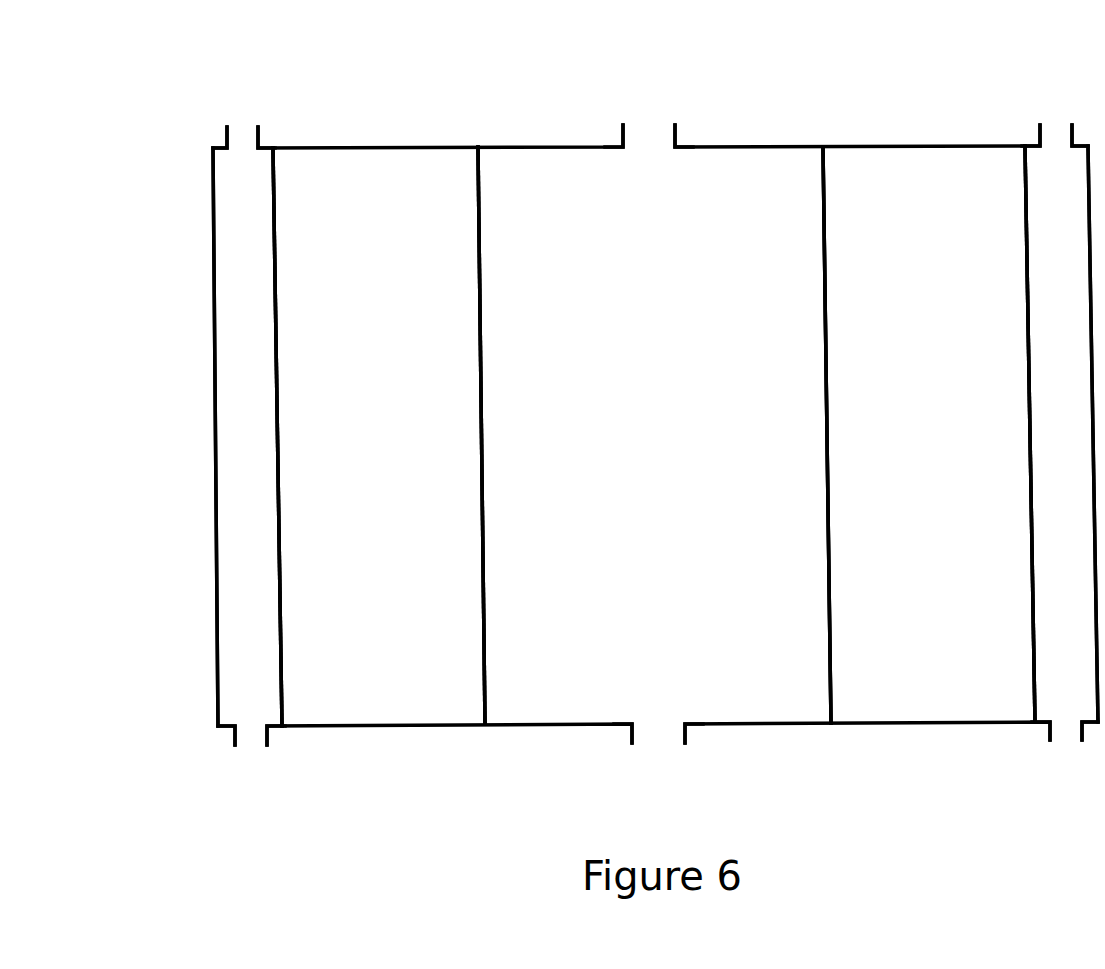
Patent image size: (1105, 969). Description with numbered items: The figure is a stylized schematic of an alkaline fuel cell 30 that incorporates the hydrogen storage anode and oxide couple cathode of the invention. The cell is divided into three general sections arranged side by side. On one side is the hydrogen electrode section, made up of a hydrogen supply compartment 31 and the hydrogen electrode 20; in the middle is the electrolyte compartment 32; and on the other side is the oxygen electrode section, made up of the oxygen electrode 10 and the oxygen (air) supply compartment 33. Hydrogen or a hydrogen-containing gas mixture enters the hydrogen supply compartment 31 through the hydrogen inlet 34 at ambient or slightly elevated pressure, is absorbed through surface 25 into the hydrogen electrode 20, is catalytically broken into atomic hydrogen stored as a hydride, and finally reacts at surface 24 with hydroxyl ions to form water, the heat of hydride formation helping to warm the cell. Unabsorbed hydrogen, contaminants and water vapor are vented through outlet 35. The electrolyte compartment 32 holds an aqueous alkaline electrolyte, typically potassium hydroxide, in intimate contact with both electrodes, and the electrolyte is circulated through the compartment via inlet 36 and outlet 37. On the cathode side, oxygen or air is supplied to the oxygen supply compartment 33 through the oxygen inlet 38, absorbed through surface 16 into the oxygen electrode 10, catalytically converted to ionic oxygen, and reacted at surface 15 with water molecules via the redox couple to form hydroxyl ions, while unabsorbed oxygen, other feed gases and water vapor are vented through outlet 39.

The oxygen electrode 10 is at (929, 434).
The surface of the oxygen electrode 15 is at (819, 168).
The surface of the oxygen electrode 16 is at (1023, 168).
The hydrogen electrode 20 is at (379, 436).
The surface of the hydrogen electrode 24 is at (484, 172).
The surface of the hydrogen electrode 25 is at (278, 172).
The alkaline fuel cell 30 is at (204, 285).
The hydrogen supply compartment 31 is at (247, 437).
The electrolyte compartment 32 is at (654, 435).
The oxygen supply compartment 33 is at (1061, 434).
The hydrogen inlet 34 is at (241, 139).
The outlet 35 is at (250, 738).
The inlet 36 is at (648, 140).
The outlet 37 is at (659, 731).
The oxygen inlet 38 is at (1057, 139).
The outlet 39 is at (1067, 726).